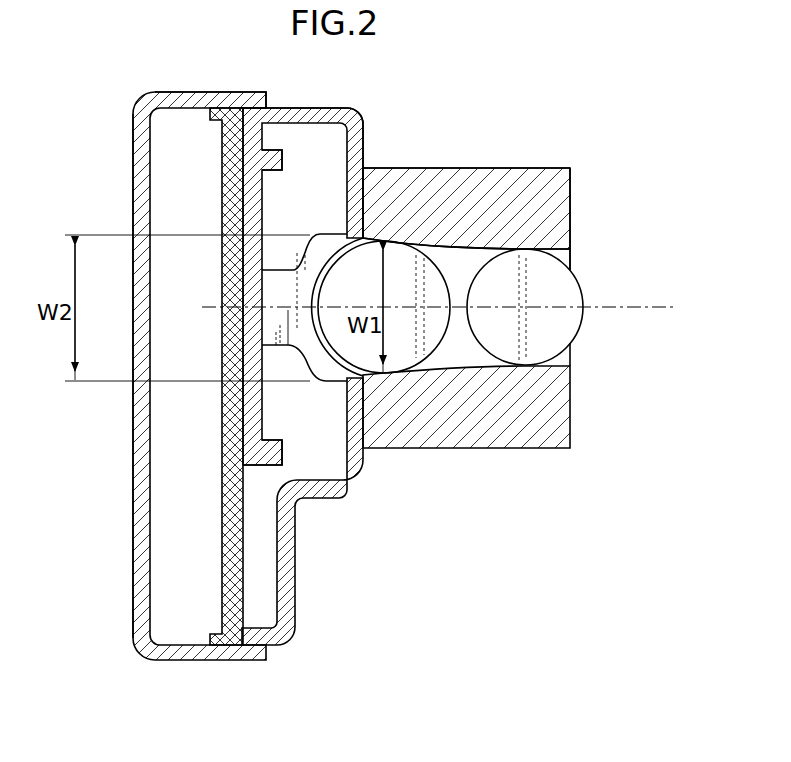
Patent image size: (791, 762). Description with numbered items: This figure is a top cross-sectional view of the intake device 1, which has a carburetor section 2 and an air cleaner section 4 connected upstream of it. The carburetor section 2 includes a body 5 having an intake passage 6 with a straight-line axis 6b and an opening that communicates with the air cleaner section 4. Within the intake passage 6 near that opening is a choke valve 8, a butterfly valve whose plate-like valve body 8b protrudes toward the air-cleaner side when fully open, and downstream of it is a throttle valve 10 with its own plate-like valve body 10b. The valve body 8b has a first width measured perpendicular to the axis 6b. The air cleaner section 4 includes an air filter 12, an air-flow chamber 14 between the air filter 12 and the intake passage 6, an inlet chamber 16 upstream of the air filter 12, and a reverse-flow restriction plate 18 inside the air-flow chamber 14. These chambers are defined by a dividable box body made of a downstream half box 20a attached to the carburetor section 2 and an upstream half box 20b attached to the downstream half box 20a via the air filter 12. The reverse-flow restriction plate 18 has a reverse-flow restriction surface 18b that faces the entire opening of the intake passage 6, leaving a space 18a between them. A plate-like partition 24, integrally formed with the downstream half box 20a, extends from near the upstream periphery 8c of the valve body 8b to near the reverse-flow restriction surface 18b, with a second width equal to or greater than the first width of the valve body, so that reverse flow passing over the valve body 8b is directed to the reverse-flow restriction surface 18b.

The intake device 1 is at (640, 168).
The carburetor section 2 is at (507, 117).
The air cleaner section 4 is at (280, 87).
The body 5 is at (520, 167).
The intake passage 6 is at (571, 258).
The straight-line axis 6b is at (634, 304).
The choke valve 8 is at (433, 250).
The valve body 8b is at (430, 343).
The periphery 8c is at (333, 370).
The throttle valve 10 is at (557, 248).
The valve body 10b is at (527, 353).
The air filter 12 is at (222, 170).
The air-flow chamber 14 is at (307, 452).
The inlet chamber 16 is at (182, 485).
The reverse-flow restriction plate 18 is at (250, 420).
The space 18a is at (318, 413).
The reverse-flow restriction surface 18b is at (262, 194).
The downstream half box 20a is at (310, 108).
The upstream half box 20b is at (133, 115).
The partition 24 is at (272, 351).